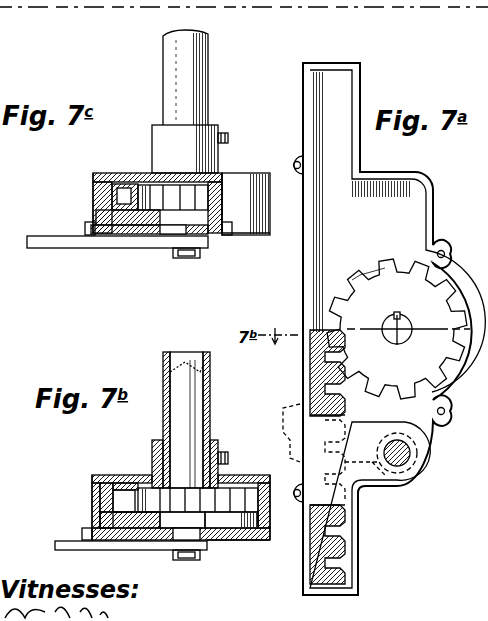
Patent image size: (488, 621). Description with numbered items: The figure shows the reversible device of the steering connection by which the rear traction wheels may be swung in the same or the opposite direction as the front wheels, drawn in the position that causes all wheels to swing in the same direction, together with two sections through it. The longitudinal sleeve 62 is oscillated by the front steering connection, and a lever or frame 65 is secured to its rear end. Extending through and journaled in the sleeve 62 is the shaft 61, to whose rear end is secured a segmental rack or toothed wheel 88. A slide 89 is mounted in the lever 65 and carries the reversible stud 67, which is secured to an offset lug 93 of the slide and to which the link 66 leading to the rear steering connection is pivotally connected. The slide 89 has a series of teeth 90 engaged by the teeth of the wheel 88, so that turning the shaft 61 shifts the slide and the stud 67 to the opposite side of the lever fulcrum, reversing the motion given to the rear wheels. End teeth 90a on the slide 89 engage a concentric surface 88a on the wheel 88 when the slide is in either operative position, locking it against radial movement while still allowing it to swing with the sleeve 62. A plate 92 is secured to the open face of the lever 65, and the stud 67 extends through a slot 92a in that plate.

In FIG. 7B, the shaft 61 is at (190, 397).
In FIG. 7A, the shaft 61 is at (393, 344).
In FIG. 7C, the longitudinal sleeve 62 is at (210, 88).
In FIG. 7B, the longitudinal sleeve 62 is at (210, 396).
In FIG. 7C, the lever or frame 65 is at (263, 218).
In FIG. 7B, the lever or frame 65 is at (93, 505).
In FIG. 7A, the lever or frame 65 is at (428, 186).
In FIG. 7C, the link 66 is at (72, 245).
In FIG. 7B, the link 66 is at (152, 546).
In FIG. 7A, the link 66 is at (293, 442).
In FIG. 7C, the stud 67 is at (200, 256).
In FIG. 7B, the stud 67 is at (203, 556).
In FIG. 7A, the stud 67 is at (410, 452).
In FIG. 7C, the segmental rack or toothed wheel 88 is at (220, 196).
In FIG. 7B, the segmental rack or toothed wheel 88 is at (233, 493).
In FIG. 7A, the segmental rack or toothed wheel 88 is at (398, 329).
In FIG. 7B, the concentric surface 88a is at (148, 506).
In FIG. 7A, the concentric surface 88a is at (365, 288).
In FIG. 7C, the slide 89 is at (93, 200).
In FIG. 7B, the slide 89 is at (92, 521).
In FIG. 7A, the slide 89 is at (345, 491).
In FIG. 7C, the teeth 90 is at (122, 190).
In FIG. 7B, the teeth 90 is at (110, 490).
In FIG. 7A, the teeth 90 is at (343, 527).
In FIG. 7A, the end teeth 90a is at (330, 340).
In FIG. 7C, the plate 92 is at (250, 236).
In FIG. 7B, the plate 92 is at (258, 541).
In FIG. 7C, the slot 92a is at (166, 235).
In FIG. 7B, the slot 92a is at (215, 540).
In FIG. 7C, the offset lug 93 is at (155, 228).
In FIG. 7B, the offset lug 93 is at (140, 518).
In FIG. 7A, the offset lug 93 is at (405, 487).